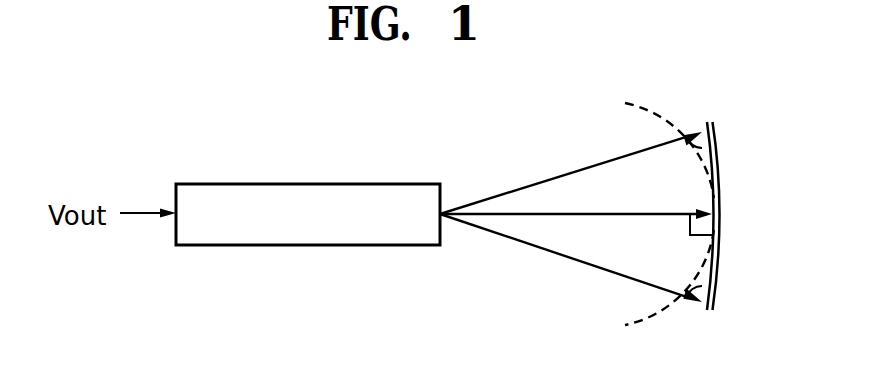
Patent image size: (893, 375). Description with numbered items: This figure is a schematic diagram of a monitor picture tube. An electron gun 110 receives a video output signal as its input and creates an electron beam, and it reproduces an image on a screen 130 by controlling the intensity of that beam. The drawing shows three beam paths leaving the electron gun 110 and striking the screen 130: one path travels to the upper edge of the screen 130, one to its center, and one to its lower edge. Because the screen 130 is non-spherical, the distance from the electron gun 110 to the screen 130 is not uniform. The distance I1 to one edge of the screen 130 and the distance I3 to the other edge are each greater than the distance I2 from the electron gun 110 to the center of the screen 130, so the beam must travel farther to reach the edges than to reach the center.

The electron gun 110 is at (304, 245).
The screen 130 is at (720, 219).
The distance to the screen edge I1 is at (571, 173).
The distance to the screen center I2 is at (576, 202).
The distance to the screen edge I3 is at (571, 258).